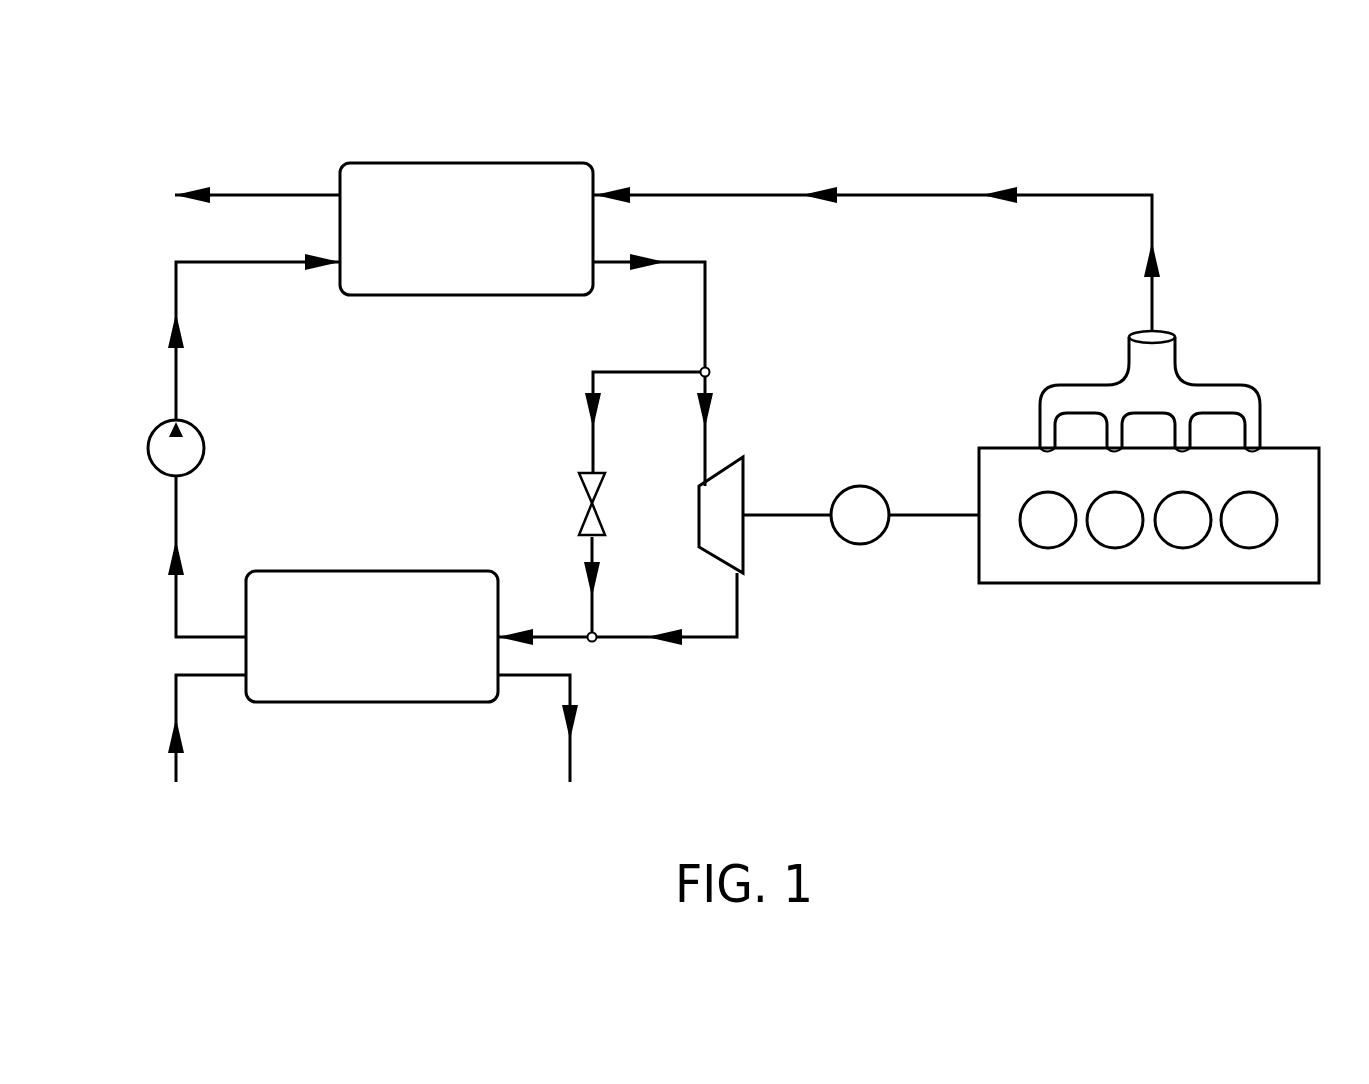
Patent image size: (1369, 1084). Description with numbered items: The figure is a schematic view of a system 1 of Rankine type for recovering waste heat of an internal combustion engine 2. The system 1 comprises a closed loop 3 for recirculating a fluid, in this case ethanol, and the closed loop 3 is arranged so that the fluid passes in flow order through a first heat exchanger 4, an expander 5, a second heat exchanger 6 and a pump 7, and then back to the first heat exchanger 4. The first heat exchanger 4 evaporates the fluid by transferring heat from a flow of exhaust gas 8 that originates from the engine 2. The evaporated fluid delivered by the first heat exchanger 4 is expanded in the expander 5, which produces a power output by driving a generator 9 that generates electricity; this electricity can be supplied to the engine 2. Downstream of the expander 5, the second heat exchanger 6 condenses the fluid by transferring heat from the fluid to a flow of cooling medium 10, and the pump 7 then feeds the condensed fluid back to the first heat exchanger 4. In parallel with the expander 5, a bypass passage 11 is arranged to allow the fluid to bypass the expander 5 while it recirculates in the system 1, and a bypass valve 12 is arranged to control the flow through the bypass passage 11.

The system 1 is at (922, 673).
The internal combustion engine 2 is at (1152, 583).
The closed loop 3 is at (175, 283).
The first heat exchanger 4 is at (469, 163).
The expander 5 is at (743, 540).
The second heat exchanger 6 is at (375, 702).
The pump 7 is at (148, 450).
The flow of exhaust gas 8 is at (893, 195).
The generator 9 is at (863, 544).
The flow of cooling medium 10 is at (175, 693).
The bypass passage 11 is at (592, 583).
The bypass valve 12 is at (583, 523).